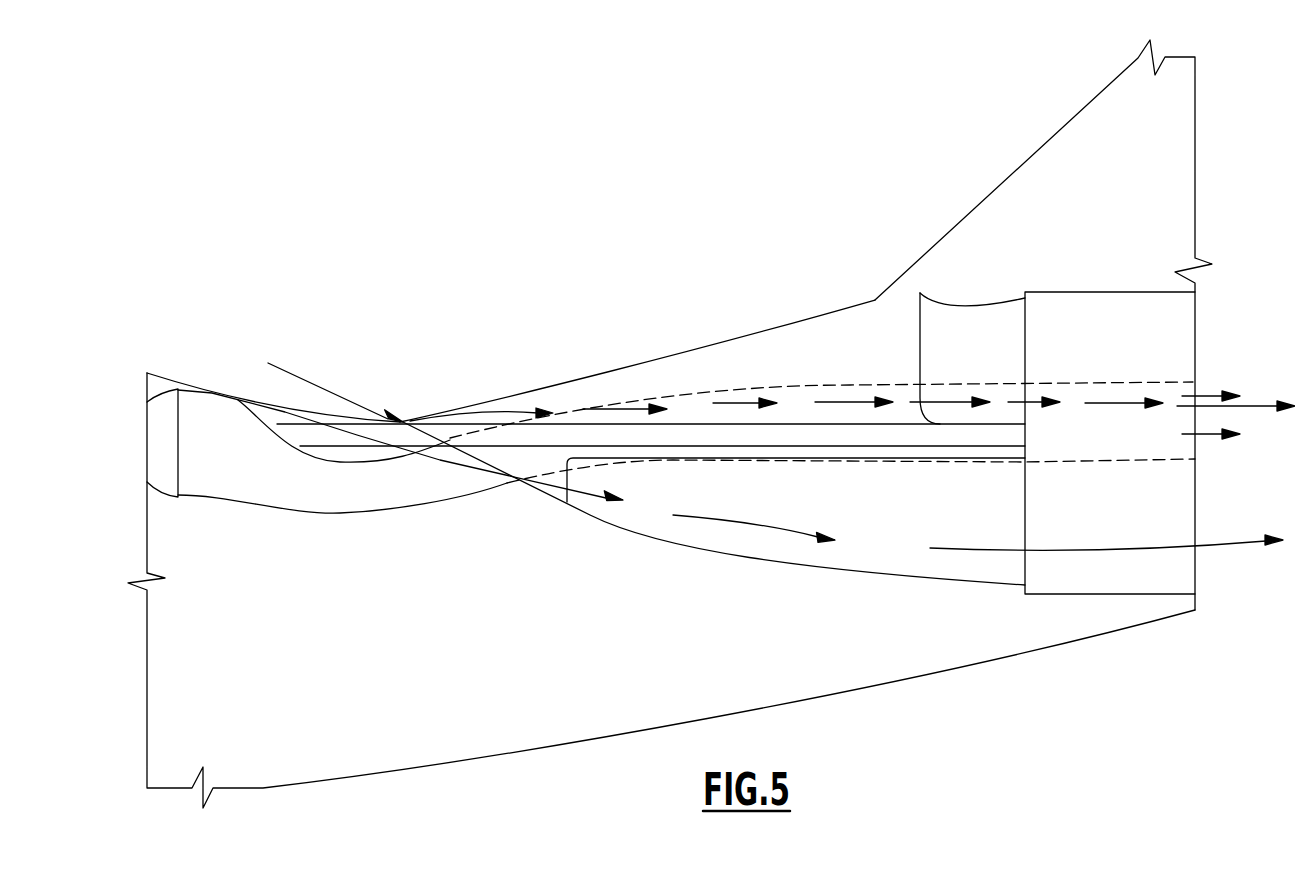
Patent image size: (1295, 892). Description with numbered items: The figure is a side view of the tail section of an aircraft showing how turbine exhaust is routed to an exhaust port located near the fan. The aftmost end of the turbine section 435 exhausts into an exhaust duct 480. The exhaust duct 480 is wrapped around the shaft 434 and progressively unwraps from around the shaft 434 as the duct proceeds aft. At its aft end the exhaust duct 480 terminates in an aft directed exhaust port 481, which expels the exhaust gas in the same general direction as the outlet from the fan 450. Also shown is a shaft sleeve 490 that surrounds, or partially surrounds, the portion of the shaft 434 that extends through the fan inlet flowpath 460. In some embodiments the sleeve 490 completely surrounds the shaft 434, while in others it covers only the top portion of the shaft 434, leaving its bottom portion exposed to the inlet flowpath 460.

The turbine section 435 is at (170, 397).
The fan inlet flowpath 460 is at (303, 378).
The shaft 434 is at (333, 438).
The shaft sleeve 490 is at (453, 437).
The exhaust duct 480 is at (210, 477).
The fan 450 is at (1140, 585).
The exhaust port 481 is at (1189, 388).